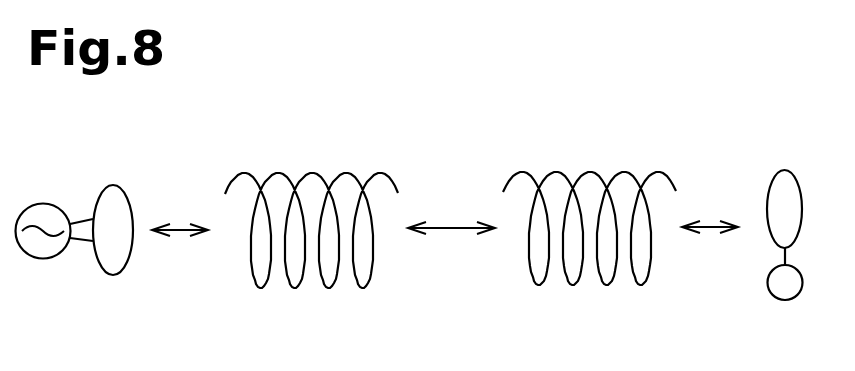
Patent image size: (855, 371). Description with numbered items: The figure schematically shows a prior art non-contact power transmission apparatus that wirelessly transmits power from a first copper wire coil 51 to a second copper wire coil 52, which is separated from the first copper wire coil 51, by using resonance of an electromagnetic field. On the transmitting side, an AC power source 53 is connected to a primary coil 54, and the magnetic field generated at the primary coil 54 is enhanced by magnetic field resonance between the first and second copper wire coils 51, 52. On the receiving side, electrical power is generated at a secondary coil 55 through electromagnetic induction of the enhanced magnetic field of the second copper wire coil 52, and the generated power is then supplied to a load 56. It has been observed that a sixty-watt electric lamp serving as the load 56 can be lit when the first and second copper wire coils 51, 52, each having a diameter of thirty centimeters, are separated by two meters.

The first copper wire coil 51 is at (277, 173).
The second copper wire coil 52 is at (628, 172).
The AC power source 53 is at (45, 203).
The primary coil 54 is at (113, 186).
The secondary coil 55 is at (785, 170).
The load 56 is at (783, 301).